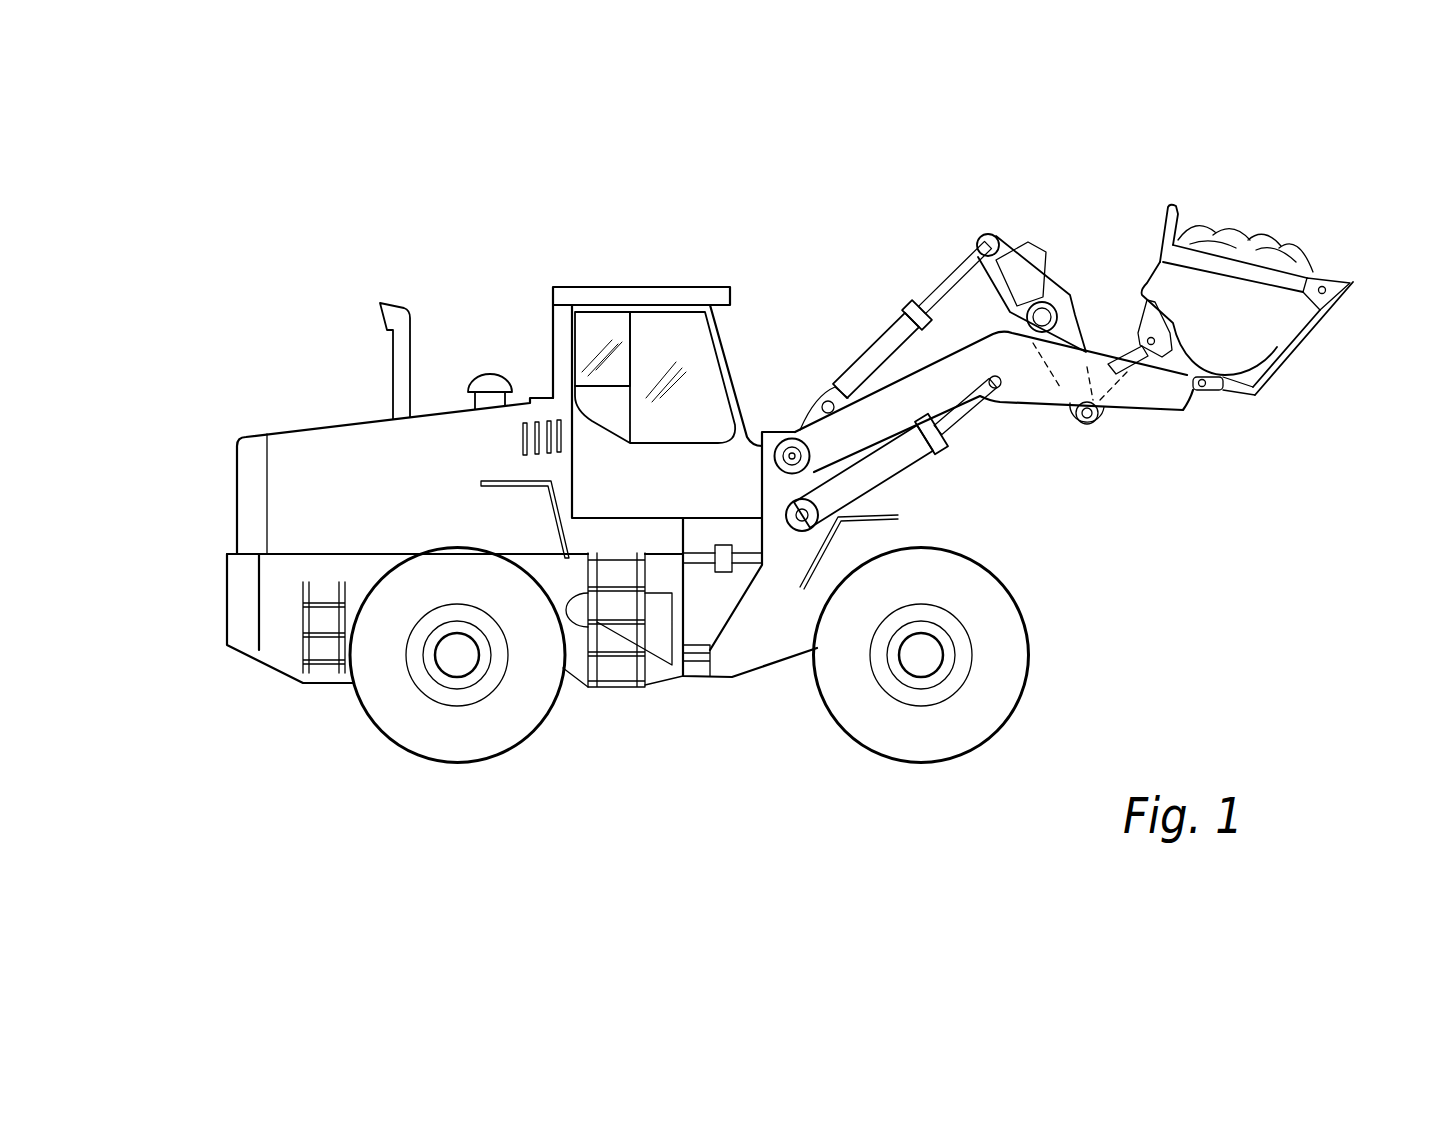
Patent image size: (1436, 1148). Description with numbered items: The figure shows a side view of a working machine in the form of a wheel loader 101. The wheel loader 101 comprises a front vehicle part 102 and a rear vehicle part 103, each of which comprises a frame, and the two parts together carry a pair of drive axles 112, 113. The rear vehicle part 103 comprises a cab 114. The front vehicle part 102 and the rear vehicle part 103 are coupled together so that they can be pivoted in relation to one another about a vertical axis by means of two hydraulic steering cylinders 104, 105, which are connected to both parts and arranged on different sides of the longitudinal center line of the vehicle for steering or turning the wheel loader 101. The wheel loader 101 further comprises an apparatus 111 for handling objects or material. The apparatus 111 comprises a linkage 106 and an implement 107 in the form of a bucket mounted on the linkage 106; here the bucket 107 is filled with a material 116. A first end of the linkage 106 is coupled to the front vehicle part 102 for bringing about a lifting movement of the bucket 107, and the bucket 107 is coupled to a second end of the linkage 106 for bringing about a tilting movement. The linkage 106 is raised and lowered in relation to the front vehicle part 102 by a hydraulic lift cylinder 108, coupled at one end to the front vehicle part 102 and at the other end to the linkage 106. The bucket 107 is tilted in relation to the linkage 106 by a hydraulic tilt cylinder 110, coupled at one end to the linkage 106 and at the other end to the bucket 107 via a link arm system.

The wheel loader 101 is at (505, 263).
The front vehicle part 102 is at (782, 648).
The rear vehicle part 103 is at (278, 642).
The hydraulic steering cylinder 104 is at (685, 701).
The hydraulic steering cylinder 105 is at (742, 562).
The linkage 106 is at (900, 247).
The implement (bucket) 107 is at (1305, 338).
The hydraulic lift cylinder 108 is at (897, 465).
The hydraulic tilt cylinder 110 is at (868, 363).
The apparatus for handling objects or material 111 is at (1115, 185).
The drive axle 112 is at (452, 665).
The drive axle 113 is at (920, 665).
The cab 114 is at (655, 282).
The material 116 is at (1258, 245).